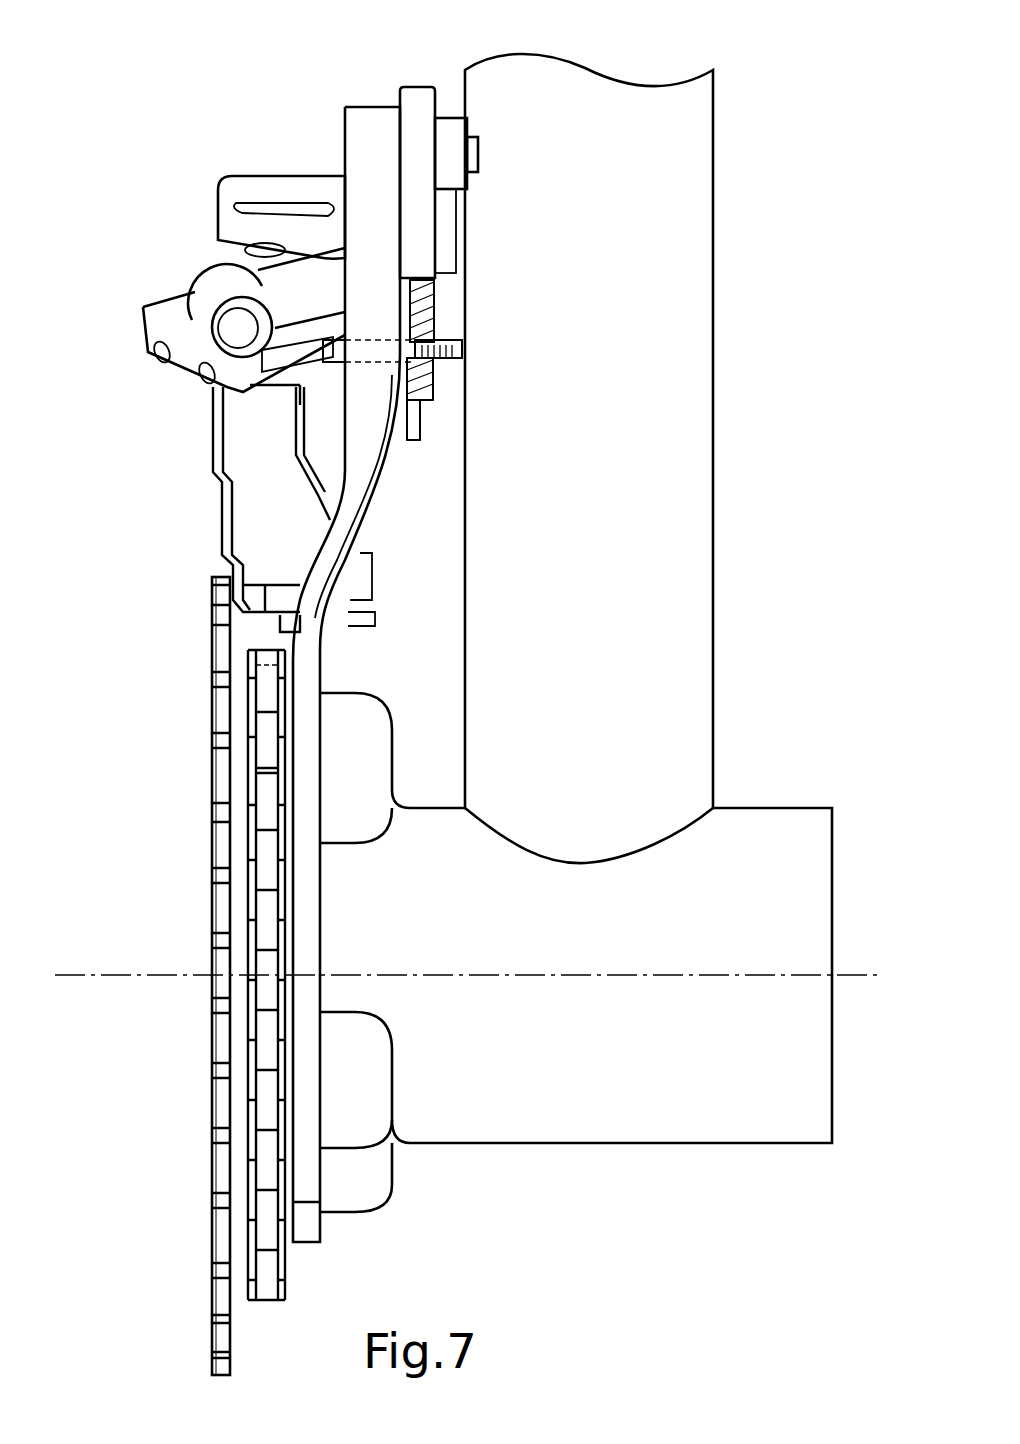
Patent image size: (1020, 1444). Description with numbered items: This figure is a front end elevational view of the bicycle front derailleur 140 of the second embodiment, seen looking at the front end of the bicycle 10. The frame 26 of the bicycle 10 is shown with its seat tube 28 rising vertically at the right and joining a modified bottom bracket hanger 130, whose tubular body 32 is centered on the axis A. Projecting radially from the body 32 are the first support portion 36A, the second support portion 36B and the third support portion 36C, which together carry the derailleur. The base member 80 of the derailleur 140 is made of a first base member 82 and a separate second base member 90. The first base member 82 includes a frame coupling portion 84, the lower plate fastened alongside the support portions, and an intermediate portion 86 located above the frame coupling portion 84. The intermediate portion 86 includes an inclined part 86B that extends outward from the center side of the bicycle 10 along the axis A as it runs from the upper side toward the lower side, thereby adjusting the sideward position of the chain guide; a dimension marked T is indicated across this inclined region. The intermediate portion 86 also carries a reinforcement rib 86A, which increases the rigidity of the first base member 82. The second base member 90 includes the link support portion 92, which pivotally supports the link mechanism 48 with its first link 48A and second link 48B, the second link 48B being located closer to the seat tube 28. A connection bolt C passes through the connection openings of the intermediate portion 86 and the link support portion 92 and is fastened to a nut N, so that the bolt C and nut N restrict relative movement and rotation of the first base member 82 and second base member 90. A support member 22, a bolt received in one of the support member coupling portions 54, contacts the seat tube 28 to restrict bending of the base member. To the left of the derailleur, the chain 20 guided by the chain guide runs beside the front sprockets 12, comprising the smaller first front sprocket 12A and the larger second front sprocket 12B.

The bicycle 10 is at (822, 63).
The front sprockets 12 is at (110, 1250).
The first front sprocket 12A is at (257, 1252).
The second front sprocket 12B is at (210, 1333).
The chain 20 is at (287, 1283).
The support member 22 is at (452, 338).
The frame 26 is at (830, 722).
The seat tube 28 is at (717, 172).
The body 32 is at (636, 944).
The first support portion 36A is at (363, 693).
The second support portion 36B is at (392, 1095).
The third support portion 36C is at (390, 1195).
The link mechanism 48 is at (124, 214).
The first link 48A is at (233, 256).
The second link 48B is at (220, 212).
The support member coupling portions 54 is at (368, 364).
The base member 80 is at (348, 58).
The first base member 82 is at (371, 674).
The frame coupling portion 84 is at (318, 893).
The intermediate portion 86 is at (343, 135).
The reinforcement rib 86A is at (372, 537).
The inclined part 86B is at (370, 470).
The second base member 90 is at (450, 152).
The link support portion 92 is at (425, 87).
The bottom bracket hanger 130 is at (785, 808).
The bicycle front derailleur 140 is at (103, 90).
The axis A is at (852, 975).
The connection bolt C is at (480, 158).
The nut N is at (470, 122).
The plate thickness T is at (343, 551).